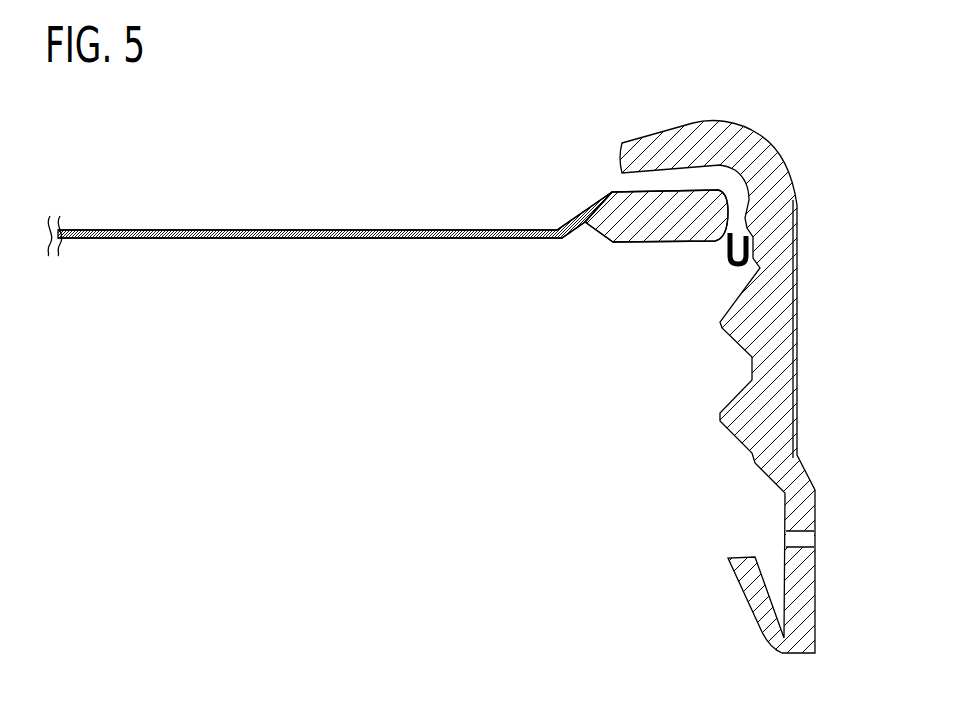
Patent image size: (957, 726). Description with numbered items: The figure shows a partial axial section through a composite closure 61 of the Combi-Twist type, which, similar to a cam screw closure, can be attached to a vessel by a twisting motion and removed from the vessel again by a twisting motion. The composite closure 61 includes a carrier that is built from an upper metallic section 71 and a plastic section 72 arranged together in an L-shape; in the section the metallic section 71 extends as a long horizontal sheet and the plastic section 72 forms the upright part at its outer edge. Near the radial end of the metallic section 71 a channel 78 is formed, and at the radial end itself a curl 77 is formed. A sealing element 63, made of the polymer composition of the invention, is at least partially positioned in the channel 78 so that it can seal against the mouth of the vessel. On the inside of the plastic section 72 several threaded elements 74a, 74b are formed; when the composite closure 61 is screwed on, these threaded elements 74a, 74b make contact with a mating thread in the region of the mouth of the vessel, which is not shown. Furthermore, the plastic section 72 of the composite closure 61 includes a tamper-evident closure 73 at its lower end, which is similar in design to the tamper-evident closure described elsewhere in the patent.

The composite closure 61 is at (432, 154).
The upper metallic section 71 is at (247, 230).
The sealing element 63 is at (607, 236).
The plastic section 72 is at (776, 152).
The channel 78 is at (615, 188).
The curl 77 is at (727, 262).
The threaded element 74a is at (718, 328).
The threaded element 74b is at (718, 420).
The tamper-evident closure 73 is at (808, 590).